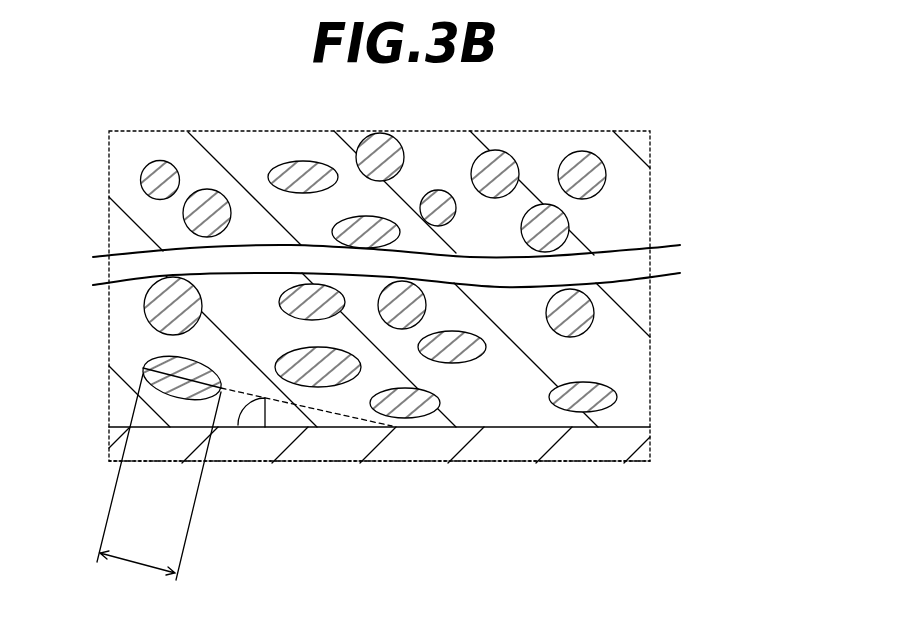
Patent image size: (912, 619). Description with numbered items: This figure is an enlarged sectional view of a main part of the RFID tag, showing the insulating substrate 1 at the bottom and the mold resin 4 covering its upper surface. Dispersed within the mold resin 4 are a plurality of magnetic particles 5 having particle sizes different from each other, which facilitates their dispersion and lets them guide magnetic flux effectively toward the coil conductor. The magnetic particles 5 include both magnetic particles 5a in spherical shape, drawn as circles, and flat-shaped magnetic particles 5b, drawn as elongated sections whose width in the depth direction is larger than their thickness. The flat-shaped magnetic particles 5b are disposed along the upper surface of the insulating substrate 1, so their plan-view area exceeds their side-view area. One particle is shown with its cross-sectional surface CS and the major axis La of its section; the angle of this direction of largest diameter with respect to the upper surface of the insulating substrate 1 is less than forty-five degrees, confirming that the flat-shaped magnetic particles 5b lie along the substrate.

The insulating substrate 1 is at (575, 453).
The mold resin 4 is at (618, 298).
The magnetic particles 5 is at (450, 275).
The magnetic particles in spherical shape 5a is at (583, 320).
The flat-shaped magnetic particles 5b is at (590, 397).
The cross-sectional surface CS is at (181, 380).
The major axis La is at (137, 557).